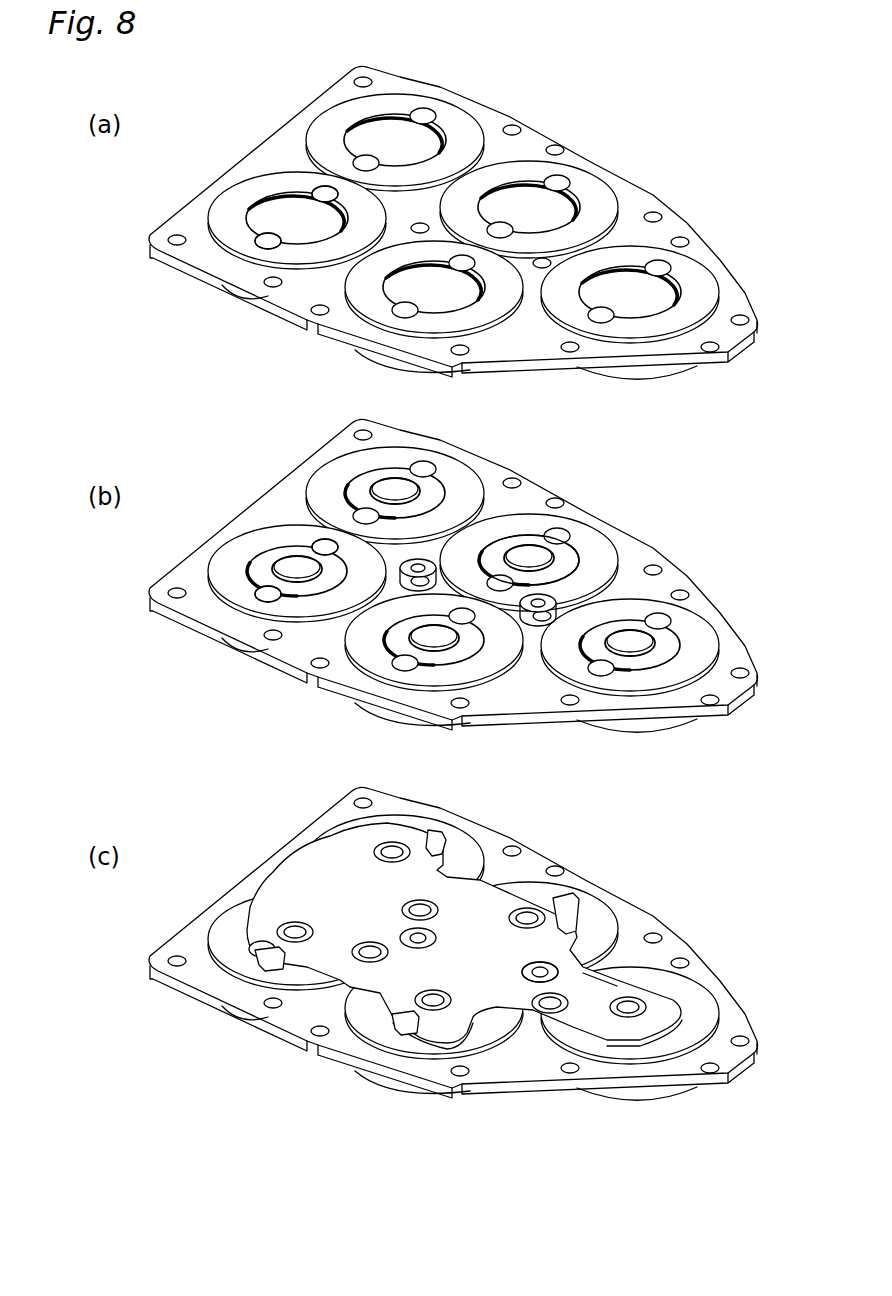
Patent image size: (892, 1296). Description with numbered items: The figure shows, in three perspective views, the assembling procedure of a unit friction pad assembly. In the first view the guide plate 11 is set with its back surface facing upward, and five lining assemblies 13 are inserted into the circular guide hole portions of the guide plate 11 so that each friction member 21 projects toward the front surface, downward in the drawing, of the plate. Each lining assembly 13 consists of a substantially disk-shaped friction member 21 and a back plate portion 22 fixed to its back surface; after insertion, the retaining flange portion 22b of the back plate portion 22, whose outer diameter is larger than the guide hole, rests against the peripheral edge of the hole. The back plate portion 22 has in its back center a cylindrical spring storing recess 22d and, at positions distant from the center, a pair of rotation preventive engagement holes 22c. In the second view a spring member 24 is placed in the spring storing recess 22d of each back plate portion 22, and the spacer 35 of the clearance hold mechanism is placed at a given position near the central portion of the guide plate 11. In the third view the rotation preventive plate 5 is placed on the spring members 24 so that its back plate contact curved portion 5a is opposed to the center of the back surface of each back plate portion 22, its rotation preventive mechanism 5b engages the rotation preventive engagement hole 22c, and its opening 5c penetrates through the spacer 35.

The rotation preventive plate 5 is at (350, 846).
The back plate contact curved portion 5a is at (533, 913).
The rotation preventive mechanism 5b is at (392, 1026).
The opening 5c is at (523, 967).
The guide plate 11 is at (458, 582).
The lining assembly 13 is at (550, 565).
The friction member 21 is at (459, 692).
The back plate portion 22 is at (593, 187).
The retaining flange portion 22b is at (251, 581).
The rotation preventive engagement hole 22c is at (262, 953).
The spring storing recess 22d is at (505, 756).
The spring member 24 is at (567, 553).
The spacer 35 is at (400, 575).